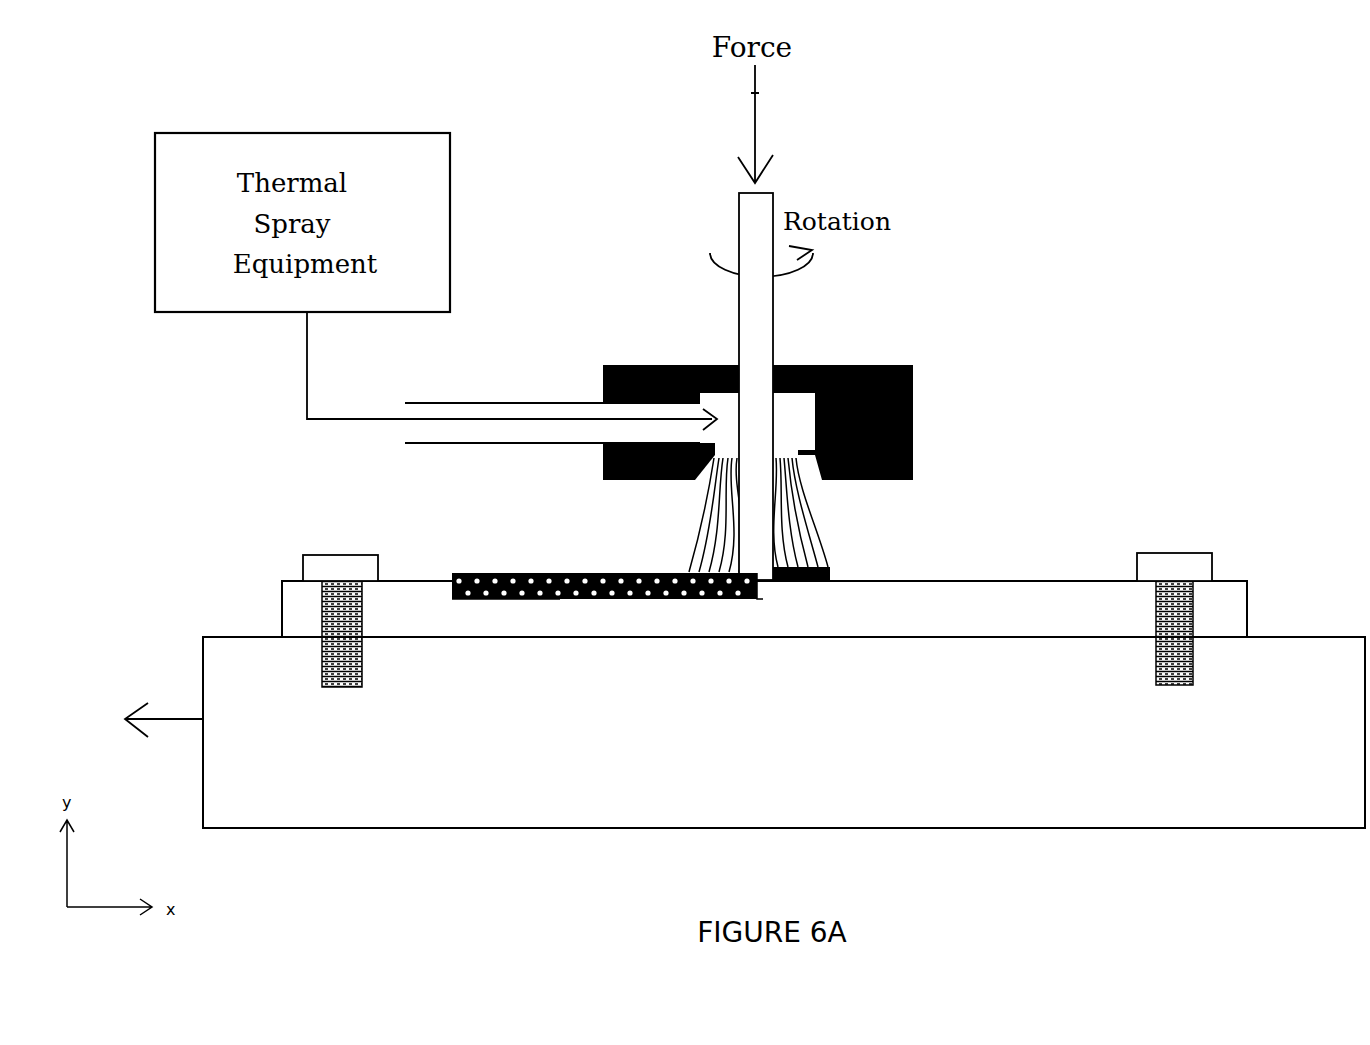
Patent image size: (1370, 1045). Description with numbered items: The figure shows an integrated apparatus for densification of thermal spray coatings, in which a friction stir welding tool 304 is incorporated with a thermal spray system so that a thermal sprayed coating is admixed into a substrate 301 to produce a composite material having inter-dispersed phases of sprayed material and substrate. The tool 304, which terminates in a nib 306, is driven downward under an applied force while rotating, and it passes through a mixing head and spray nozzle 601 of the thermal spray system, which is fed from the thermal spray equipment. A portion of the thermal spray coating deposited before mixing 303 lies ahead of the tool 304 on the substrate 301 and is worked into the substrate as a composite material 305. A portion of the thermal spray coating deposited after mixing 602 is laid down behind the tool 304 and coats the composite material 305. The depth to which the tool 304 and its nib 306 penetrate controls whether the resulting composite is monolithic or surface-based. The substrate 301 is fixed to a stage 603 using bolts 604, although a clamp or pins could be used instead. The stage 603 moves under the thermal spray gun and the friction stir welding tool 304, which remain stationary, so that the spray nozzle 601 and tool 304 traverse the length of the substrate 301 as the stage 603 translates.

The substrate 301 is at (1005, 582).
The thermal spray coating deposited before mixing 303 is at (837, 571).
The friction stir welding tool 304 is at (742, 320).
The composite material 305 is at (542, 599).
The nib 306 is at (764, 600).
The mixing head and spray nozzle 601 is at (913, 382).
The thermal spray coating deposited after mixing 602 is at (572, 572).
The stage 603 is at (1302, 634).
The bolts 604 is at (1192, 552).